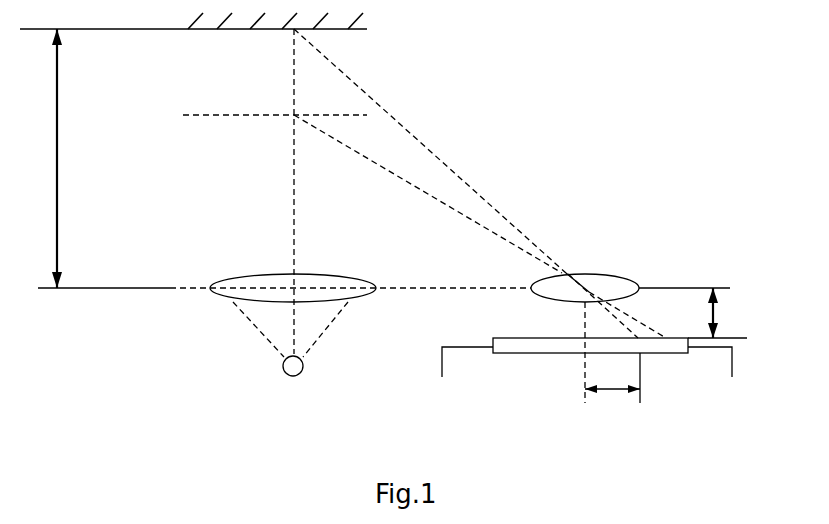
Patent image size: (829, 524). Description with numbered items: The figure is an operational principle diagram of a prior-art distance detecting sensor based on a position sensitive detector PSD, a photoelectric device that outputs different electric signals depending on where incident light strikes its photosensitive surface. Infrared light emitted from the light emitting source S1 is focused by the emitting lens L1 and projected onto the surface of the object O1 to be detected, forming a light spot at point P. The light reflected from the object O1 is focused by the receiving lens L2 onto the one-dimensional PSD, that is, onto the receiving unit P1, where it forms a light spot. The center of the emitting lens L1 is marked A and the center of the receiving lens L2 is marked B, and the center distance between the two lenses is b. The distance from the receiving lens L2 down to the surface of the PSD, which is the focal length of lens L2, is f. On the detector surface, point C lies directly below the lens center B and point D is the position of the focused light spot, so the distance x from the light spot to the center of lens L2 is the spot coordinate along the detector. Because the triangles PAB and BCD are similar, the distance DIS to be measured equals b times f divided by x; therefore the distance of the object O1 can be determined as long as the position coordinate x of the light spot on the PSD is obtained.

The light spot on object surface P is at (193, 32).
The distance to be measured DIS is at (41, 158).
The object to be detected O1 is at (275, 102).
The emitting lens L1 is at (274, 284).
The center of lens L1 A is at (311, 261).
The center distance between lenses b is at (395, 276).
The receiving lens L2 is at (561, 284).
The center of lens L2 B is at (602, 258).
The light emitting source S1 is at (290, 354).
The position sensitive detector PSD is at (594, 363).
The receiving unit P1 is at (541, 378).
The reference point on PSD surface C is at (550, 328).
The light spot position on PSD D is at (674, 328).
The focal length of lens L2 f is at (720, 313).
The light spot position coordinate x is at (612, 352).